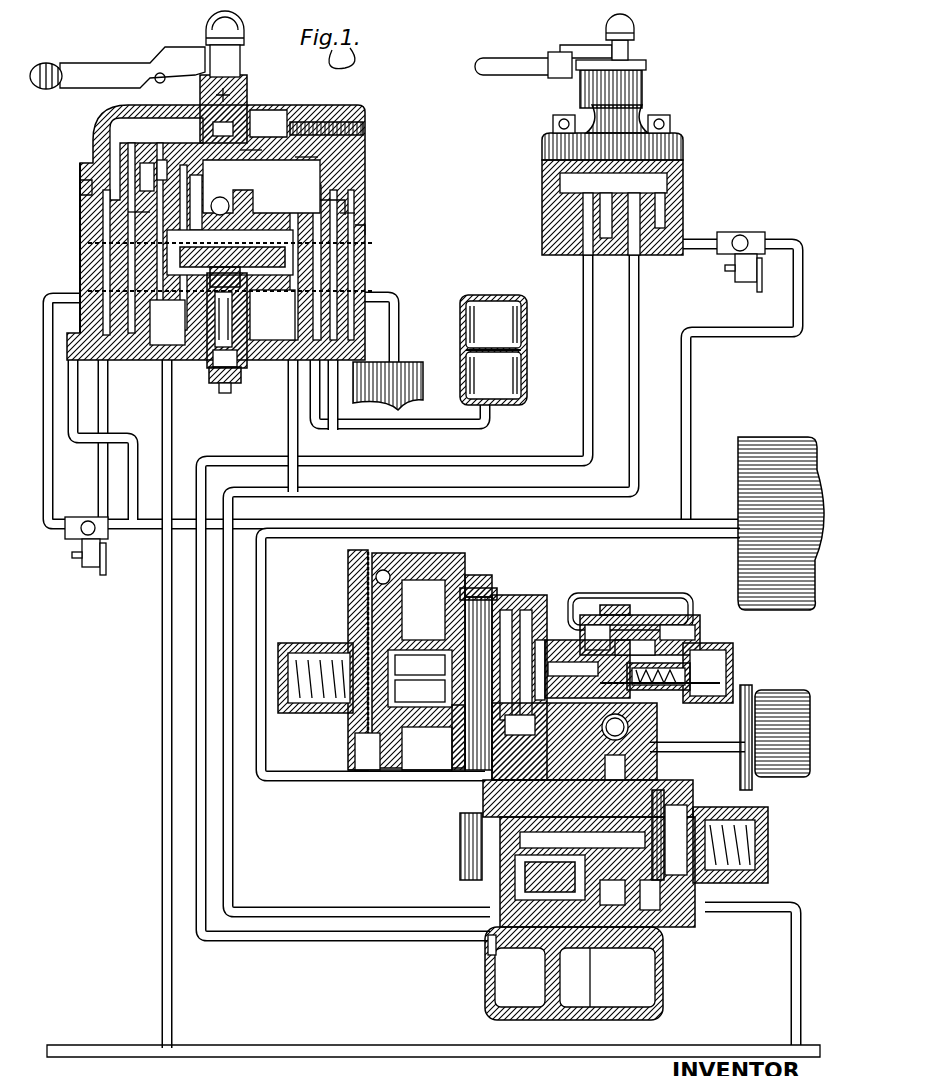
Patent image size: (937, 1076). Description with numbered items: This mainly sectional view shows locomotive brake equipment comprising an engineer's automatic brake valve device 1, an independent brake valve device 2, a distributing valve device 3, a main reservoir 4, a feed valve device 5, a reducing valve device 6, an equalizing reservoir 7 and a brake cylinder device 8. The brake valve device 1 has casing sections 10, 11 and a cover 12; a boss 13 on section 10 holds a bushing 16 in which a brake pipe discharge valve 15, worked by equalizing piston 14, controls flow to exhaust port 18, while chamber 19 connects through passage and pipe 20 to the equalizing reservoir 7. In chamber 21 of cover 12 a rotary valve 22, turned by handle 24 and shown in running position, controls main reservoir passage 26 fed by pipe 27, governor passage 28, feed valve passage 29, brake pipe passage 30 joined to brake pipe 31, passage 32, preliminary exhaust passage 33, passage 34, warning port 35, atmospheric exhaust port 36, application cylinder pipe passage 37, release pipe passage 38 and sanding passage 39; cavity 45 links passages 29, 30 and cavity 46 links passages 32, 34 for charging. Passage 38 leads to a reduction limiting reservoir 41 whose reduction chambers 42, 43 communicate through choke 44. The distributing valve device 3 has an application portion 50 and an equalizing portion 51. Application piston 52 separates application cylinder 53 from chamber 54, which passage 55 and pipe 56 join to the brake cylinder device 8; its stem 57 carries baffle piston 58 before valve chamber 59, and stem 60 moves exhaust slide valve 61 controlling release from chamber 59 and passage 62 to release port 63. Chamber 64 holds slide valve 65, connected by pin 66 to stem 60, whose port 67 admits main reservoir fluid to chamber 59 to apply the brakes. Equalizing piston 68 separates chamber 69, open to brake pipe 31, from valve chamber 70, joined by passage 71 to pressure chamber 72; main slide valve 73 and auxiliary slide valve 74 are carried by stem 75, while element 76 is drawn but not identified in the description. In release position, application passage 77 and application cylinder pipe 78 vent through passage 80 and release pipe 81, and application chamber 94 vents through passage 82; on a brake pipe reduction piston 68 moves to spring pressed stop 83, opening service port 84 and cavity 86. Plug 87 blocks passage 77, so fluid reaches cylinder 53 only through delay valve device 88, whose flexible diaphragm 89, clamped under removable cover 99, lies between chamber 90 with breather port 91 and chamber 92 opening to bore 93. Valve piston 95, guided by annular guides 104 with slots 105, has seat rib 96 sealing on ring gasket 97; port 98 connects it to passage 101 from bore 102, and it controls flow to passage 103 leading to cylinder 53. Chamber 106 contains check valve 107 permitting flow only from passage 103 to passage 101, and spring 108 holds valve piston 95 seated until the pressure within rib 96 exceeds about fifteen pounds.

The engineer's automatic brake valve device 1 is at (366, 118).
The independent brake valve device 2 is at (680, 143).
The distributing valve device 3 is at (685, 598).
The main reservoir 4 is at (757, 437).
The feed valve device 5 is at (90, 518).
The reducing valve device 6 is at (740, 233).
The equalizing reservoir 7 is at (402, 380).
The brake cylinder device 8 is at (768, 690).
The intermediate casing section 10 is at (80, 248).
The casing section 11 is at (80, 197).
The cover 12 is at (100, 135).
The boss 13 is at (208, 385).
The equalizing piston 14 is at (365, 230).
The brake pipe discharge valve 15 is at (198, 355).
The bushing 16 is at (242, 360).
The exhaust port 18 is at (224, 394).
The chamber 19 is at (338, 205).
The passage and pipe 20 is at (300, 262).
The rotary valve chamber 21 is at (266, 110).
The rotary valve 22 is at (270, 132).
The handle 24 is at (68, 72).
The main reservoir passage 26 is at (82, 188).
The pipe 27 is at (133, 442).
The passage 28 is at (150, 212).
The feed valve passage 29 is at (80, 318).
The brake pipe passage 30 is at (142, 360).
The brake pipe 31 is at (422, 1046).
The passage 32 is at (230, 250).
The preliminary exhaust passage 33 is at (192, 187).
The passage 34 is at (223, 196).
The warning port 35 is at (251, 154).
The atmospheric exhaust port 36 is at (261, 188).
The application cylinder pipe passage 37 is at (306, 161).
The distributing valve release pipe passage 38 is at (320, 278).
The sanding passage 39 is at (348, 213).
The reduction limiting reservoir 41 is at (522, 354).
The reduction chamber 42 is at (500, 385).
The reduction chamber 43 is at (515, 333).
The choke 44 is at (493, 324).
The cavity 45 is at (146, 163).
The cavity 46 is at (164, 162).
The application portion 50 is at (622, 606).
The equalizing portion 51 is at (668, 915).
The application piston 52 is at (508, 612).
The application cylinder 53 is at (590, 615).
The chamber 54 is at (528, 612).
The passage 55 is at (574, 741).
The pipe 56 is at (700, 747).
The stem 57 is at (526, 684).
The baffle piston 58 is at (520, 734).
The valve chamber 59 is at (712, 660).
The stem 60 is at (587, 669).
The exhaust slide valve 61 is at (573, 679).
The passage 62 is at (630, 727).
The brake cylinder release port 63 is at (651, 699).
The chamber 64 is at (680, 600).
The slide valve 65 is at (668, 622).
The pin 66 is at (635, 648).
The port 67 is at (598, 622).
The equalizing piston 68 is at (653, 899).
The chamber 69 is at (765, 895).
The valve chamber 70 is at (620, 830).
The passage 71 is at (607, 977).
The pressure chamber 72 is at (660, 992).
The main slide valve 73 is at (585, 856).
The auxiliary slide valve 74 is at (600, 842).
The stem 75 is at (520, 830).
The passage 76 is at (621, 767).
The application cylinder passage 77 is at (465, 880).
The application cylinder pipe 78 is at (293, 426).
The distributing valve release pipe passage 80 is at (616, 899).
The distributing valve release pipe 81 is at (585, 275).
The passage 82 is at (582, 977).
The spring pressed stop 83 is at (665, 835).
The service port 84 is at (550, 835).
The cavity 86 is at (520, 977).
The plug 87 is at (455, 745).
The delay valve device 88 is at (450, 585).
The flexible diaphragm 89 is at (372, 640).
The chamber 90 is at (308, 700).
The breather port 91 is at (285, 706).
The chamber 92 is at (355, 750).
The bore 93 is at (427, 748).
The application chamber 94 is at (492, 983).
The valve piston 95 is at (382, 770).
The annular seat rib 96 is at (420, 664).
The ring gasket 97 is at (425, 690).
The port 98 is at (420, 678).
The removable cover 99 is at (360, 592).
The passage 101 is at (478, 770).
The bore 102 is at (490, 770).
The passage 103 is at (497, 600).
The annular guide 104 is at (362, 762).
The slots 105 is at (423, 610).
The chamber 106 is at (348, 566).
The check valve 107 is at (386, 570).
The spring 108 is at (300, 650).